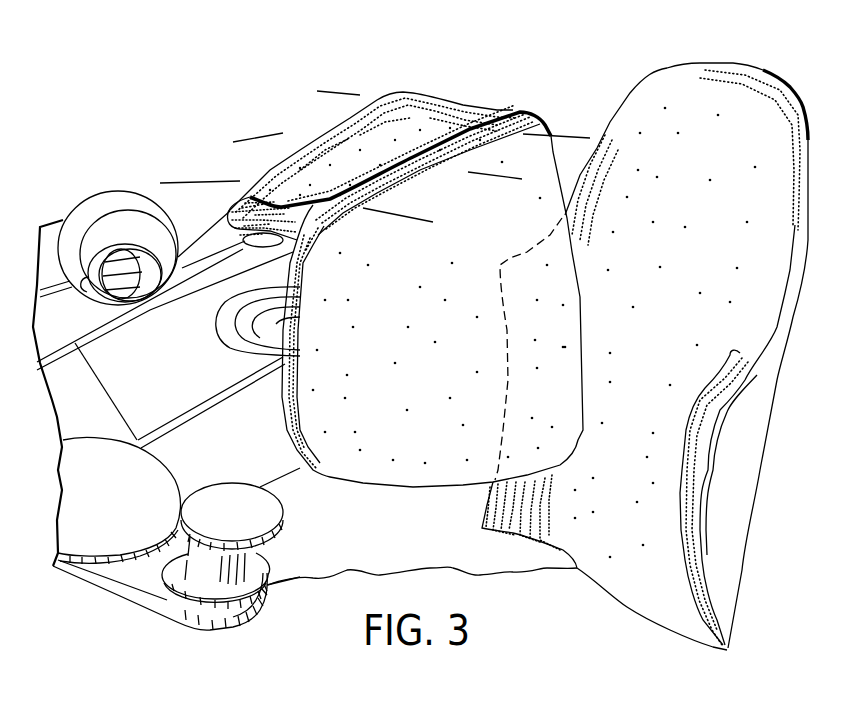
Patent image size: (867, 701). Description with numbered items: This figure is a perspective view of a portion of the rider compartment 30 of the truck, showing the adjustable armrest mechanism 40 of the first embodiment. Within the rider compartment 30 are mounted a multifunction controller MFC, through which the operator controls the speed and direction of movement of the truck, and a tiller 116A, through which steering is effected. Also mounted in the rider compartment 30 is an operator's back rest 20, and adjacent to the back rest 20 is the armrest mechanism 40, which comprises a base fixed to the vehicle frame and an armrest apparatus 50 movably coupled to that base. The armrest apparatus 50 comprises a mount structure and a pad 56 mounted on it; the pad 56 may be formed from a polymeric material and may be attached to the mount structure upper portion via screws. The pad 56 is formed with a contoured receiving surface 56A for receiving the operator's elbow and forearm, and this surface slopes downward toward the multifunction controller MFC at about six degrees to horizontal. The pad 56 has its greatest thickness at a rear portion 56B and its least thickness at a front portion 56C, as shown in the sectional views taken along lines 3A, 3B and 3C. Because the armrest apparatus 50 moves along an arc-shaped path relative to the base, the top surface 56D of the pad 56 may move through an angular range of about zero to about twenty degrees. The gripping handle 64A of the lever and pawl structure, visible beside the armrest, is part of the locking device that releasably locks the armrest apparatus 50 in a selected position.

The back rest 20 is at (733, 110).
The rider compartment 30 is at (636, 74).
The armrest mechanism 40 is at (527, 96).
The armrest apparatus 50 is at (383, 81).
The pad 56 is at (548, 136).
The contoured receiving surface 56A is at (385, 131).
The rear portion 56B is at (452, 112).
The front portion 56C is at (275, 198).
The top surface 56D is at (338, 152).
The multifunction controller MFC is at (102, 194).
The gripping handle 64A is at (218, 290).
The tiller 116A is at (218, 502).
The section line 3A is at (216, 153).
The section line 3B is at (280, 111).
The section line 3C is at (347, 68).